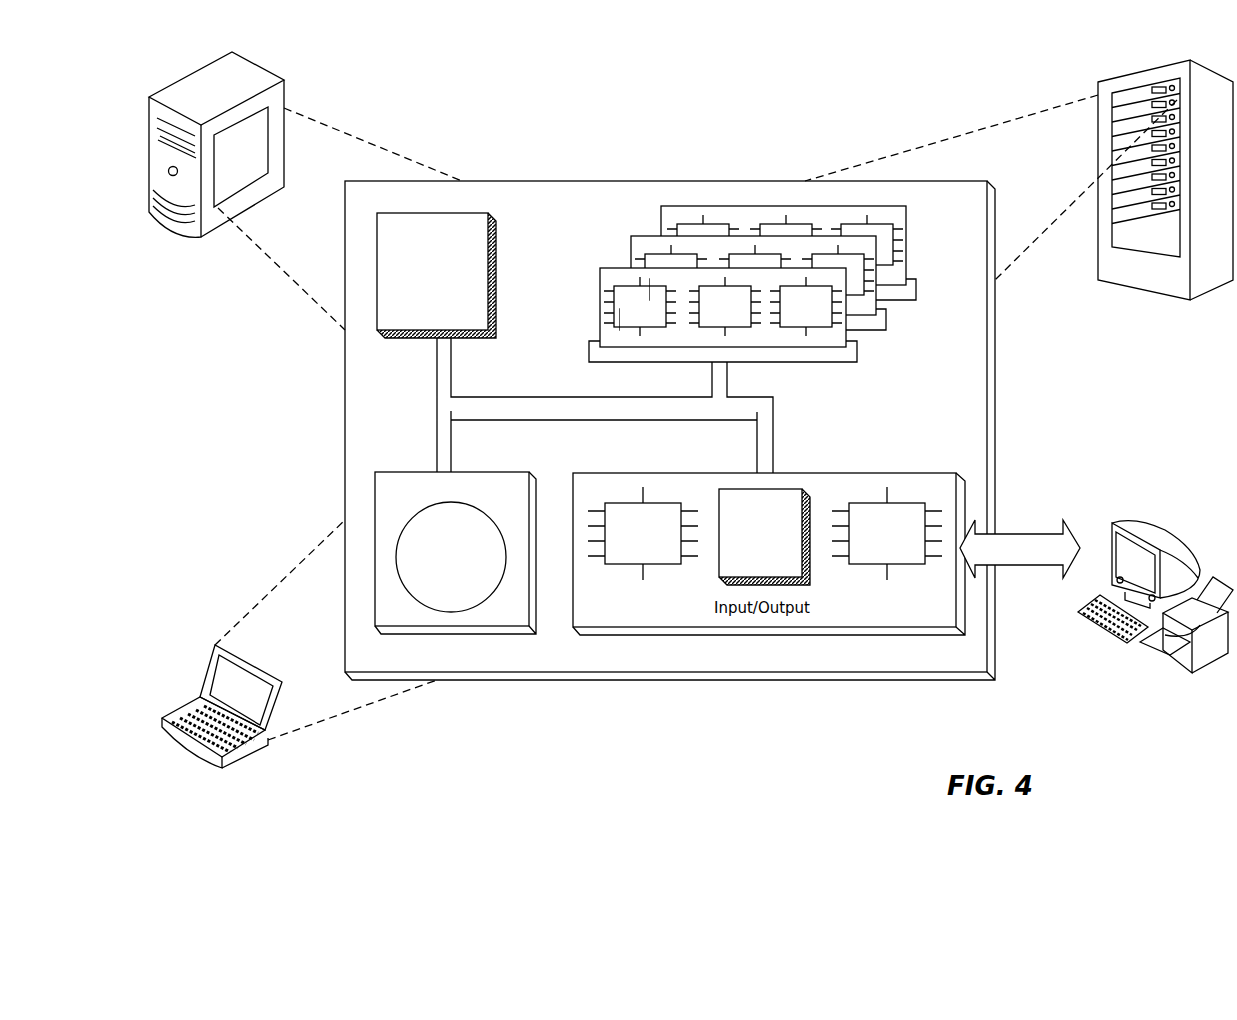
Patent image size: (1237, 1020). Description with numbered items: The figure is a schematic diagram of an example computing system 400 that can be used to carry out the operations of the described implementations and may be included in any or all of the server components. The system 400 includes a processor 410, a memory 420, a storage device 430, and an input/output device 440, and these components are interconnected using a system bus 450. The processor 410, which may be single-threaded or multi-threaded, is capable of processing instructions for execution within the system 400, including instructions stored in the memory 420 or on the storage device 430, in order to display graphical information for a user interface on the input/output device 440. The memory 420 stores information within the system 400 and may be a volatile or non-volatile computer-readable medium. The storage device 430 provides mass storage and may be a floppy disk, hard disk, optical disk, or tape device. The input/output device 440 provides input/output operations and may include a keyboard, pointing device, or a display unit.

The computing system 400 is at (512, 112).
The processor 410 is at (482, 323).
The memory 420 is at (914, 330).
The storage device 430 is at (522, 620).
The input/output device 440 is at (1110, 526).
The system bus 450 is at (600, 411).